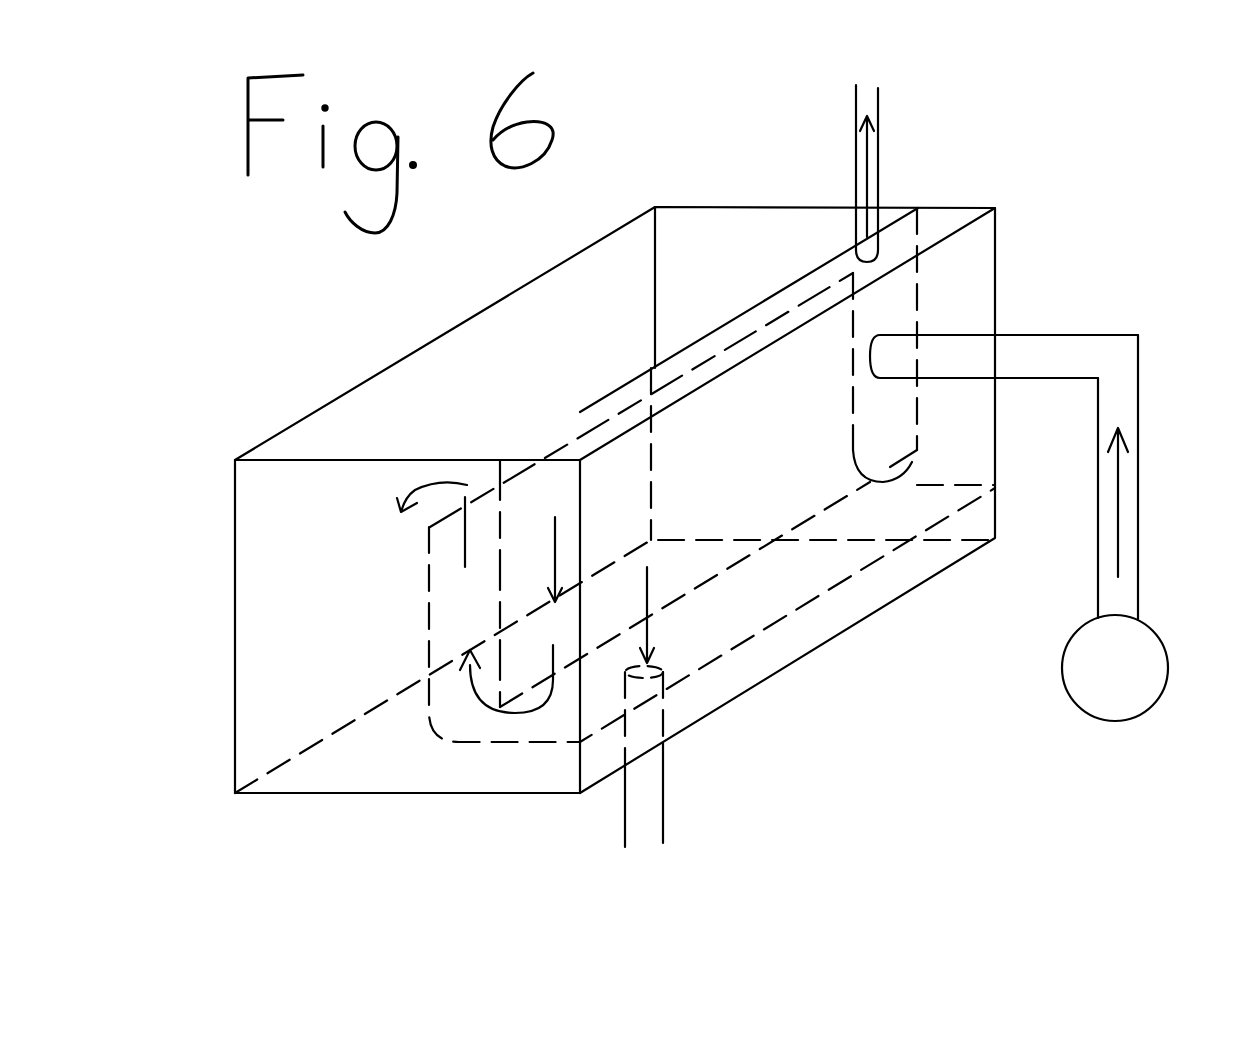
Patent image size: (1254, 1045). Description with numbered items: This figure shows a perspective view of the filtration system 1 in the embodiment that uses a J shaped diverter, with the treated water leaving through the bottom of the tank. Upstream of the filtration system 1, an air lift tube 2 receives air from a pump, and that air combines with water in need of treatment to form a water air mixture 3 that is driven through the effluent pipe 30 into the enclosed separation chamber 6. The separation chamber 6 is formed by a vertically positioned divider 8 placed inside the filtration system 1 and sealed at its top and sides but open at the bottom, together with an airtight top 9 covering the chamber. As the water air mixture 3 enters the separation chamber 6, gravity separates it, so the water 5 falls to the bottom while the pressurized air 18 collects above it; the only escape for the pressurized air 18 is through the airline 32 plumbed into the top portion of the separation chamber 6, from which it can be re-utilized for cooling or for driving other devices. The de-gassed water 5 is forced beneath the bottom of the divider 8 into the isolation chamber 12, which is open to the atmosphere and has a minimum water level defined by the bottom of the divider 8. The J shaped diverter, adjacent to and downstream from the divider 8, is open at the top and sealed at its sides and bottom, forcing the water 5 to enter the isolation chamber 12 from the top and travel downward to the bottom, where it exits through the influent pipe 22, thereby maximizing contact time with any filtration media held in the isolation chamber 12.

The filtration system 1 is at (642, 473).
The air lift tube 2 is at (1140, 397).
The water air mixture 3 is at (1120, 517).
The water 5 is at (465, 497).
The separation chamber 6 is at (963, 273).
The divider 8 is at (503, 607).
The airtight top 9 is at (970, 206).
The isolation chamber 12 is at (303, 615).
The pressurized air 18 is at (868, 160).
The influent pipe 22 is at (663, 800).
The effluent pipe 30 is at (1076, 330).
The airline 32 is at (878, 90).